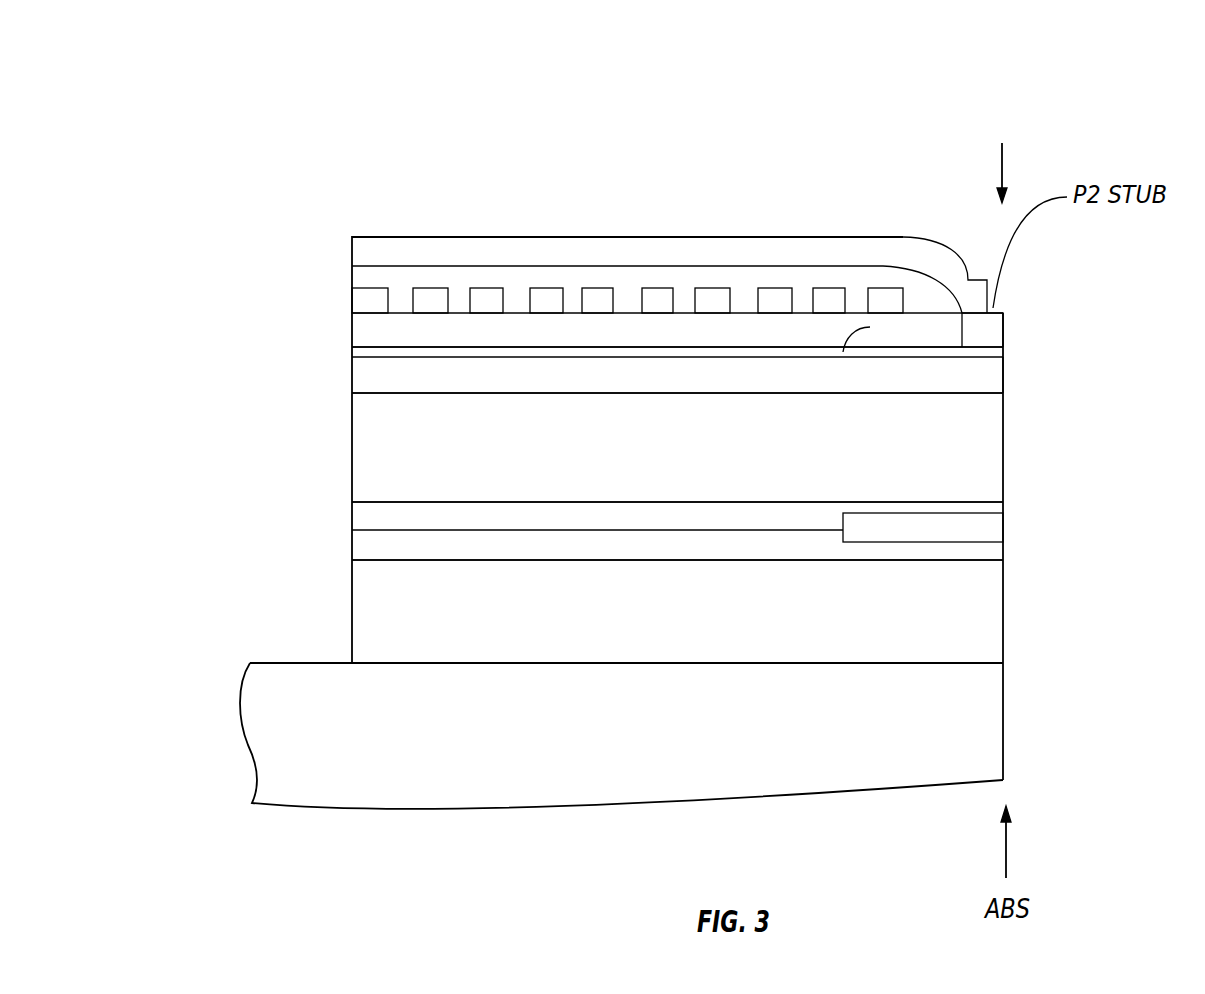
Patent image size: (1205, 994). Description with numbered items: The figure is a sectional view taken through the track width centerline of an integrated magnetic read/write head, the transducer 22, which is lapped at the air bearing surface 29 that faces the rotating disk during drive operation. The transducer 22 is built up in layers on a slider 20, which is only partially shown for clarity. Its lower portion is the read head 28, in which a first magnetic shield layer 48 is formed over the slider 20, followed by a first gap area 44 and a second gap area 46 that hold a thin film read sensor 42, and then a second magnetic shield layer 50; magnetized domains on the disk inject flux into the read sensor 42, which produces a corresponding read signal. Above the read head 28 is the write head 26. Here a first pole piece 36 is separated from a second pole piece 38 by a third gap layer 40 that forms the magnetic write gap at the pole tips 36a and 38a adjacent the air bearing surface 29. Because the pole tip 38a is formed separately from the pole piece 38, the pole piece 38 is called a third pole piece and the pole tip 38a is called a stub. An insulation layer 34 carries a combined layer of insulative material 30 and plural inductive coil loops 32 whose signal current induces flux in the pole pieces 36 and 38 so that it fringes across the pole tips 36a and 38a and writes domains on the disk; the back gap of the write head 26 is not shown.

The slider 20 is at (250, 677).
The transducer 22 is at (315, 70).
The write head 26 is at (1084, 248).
The read head 28 is at (1073, 492).
The air bearing surface 29 is at (1005, 155).
The insulative material 30 is at (352, 268).
The inductive coil loops 32 is at (352, 295).
The I1 insulation layer 34 is at (352, 328).
The first pole piece 36 is at (352, 393).
The pole tip 36a is at (1003, 385).
The second pole piece 38 is at (352, 248).
The pole tip 38a is at (1003, 327).
The G3 gap layer 40 is at (352, 352).
The read sensor 42 is at (988, 523).
The G1 gap area 44 is at (352, 548).
The G2 gap area 46 is at (352, 515).
The first magnetic shield layer 48 is at (352, 593).
The second magnetic shield layer 50 is at (352, 450).